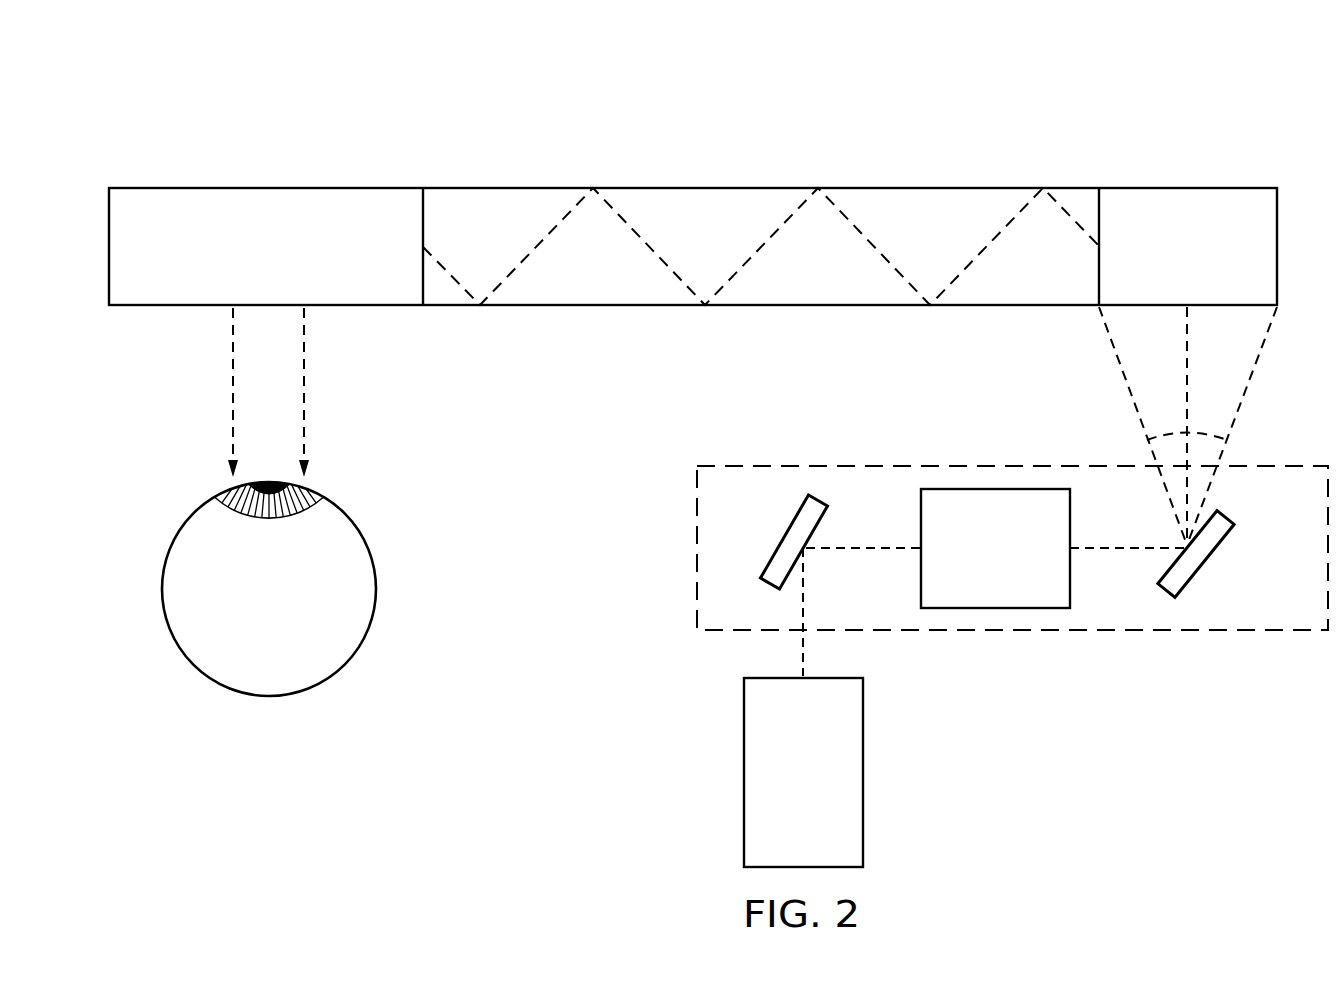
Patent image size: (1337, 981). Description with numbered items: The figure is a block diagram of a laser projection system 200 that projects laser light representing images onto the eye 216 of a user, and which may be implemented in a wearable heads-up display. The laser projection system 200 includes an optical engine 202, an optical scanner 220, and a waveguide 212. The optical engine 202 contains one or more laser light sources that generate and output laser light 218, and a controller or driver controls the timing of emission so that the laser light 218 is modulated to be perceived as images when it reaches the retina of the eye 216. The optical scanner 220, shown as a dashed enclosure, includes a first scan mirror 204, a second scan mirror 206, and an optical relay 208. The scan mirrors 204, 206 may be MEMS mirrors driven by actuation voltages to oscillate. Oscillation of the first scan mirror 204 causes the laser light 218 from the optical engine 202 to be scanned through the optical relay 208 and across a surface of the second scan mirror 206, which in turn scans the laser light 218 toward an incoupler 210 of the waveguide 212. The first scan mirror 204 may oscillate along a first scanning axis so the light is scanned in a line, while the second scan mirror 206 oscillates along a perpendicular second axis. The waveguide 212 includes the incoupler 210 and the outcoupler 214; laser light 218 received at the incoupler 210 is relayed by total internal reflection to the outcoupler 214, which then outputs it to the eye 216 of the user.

The laser projection system 200 is at (1017, 87).
The optical engine 202 is at (864, 775).
The first scan mirror 204 is at (788, 524).
The second scan mirror 206 is at (1204, 568).
The optical relay 208 is at (1071, 590).
The incoupler 210 is at (1211, 280).
The waveguide 212 is at (503, 197).
The outcoupler 214 is at (290, 280).
The eye 216 is at (179, 651).
The laser light 218 is at (805, 592).
The optical scanner 220 is at (1042, 630).